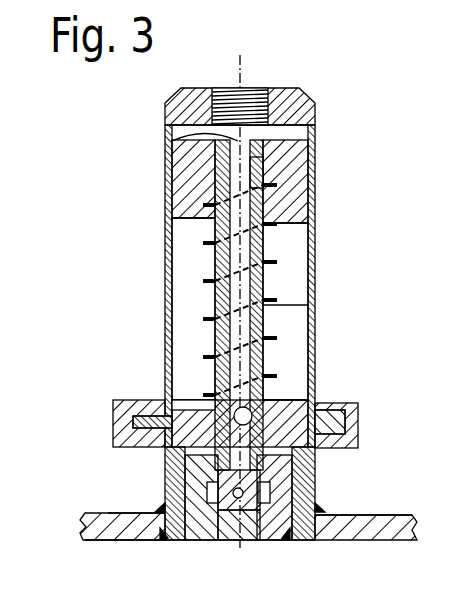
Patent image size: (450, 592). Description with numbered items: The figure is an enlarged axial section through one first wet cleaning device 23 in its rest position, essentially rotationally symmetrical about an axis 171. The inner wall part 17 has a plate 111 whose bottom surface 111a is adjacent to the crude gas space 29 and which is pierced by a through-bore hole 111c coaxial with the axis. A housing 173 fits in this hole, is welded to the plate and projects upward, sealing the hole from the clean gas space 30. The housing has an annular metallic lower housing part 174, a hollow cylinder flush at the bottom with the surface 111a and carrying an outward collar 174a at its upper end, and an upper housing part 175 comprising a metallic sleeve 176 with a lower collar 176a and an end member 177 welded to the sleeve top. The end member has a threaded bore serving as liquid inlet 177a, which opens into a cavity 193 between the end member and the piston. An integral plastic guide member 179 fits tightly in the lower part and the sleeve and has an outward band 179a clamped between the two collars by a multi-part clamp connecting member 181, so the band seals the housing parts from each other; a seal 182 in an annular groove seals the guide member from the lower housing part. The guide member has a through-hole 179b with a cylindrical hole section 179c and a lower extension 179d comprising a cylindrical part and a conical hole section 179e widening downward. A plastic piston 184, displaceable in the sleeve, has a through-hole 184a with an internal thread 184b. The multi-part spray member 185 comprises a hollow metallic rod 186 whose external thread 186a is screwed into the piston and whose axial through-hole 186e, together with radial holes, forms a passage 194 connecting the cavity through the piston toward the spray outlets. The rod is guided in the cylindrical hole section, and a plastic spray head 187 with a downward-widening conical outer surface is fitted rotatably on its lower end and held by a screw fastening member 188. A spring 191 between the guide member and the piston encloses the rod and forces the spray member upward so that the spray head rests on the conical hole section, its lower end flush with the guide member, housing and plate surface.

The inner wall part 17 is at (82, 512).
The first wet cleaning device 23 is at (158, 100).
The crude gas space 29 is at (345, 548).
The clean gas space 30 is at (335, 508).
The plate 111 is at (108, 512).
The surface 111a is at (100, 538).
The hole 111c is at (160, 512).
The axis 171 is at (240, 72).
The housing 173 is at (157, 272).
The lower housing part 174 is at (165, 470).
The collar 174a is at (120, 430).
The upper housing part 175 is at (168, 300).
The sleeve 176 is at (170, 335).
The collar 176a is at (175, 403).
The end member 177 is at (318, 100).
The liquid inlet 177a is at (263, 82).
The guide member 179 is at (170, 370).
The band 179a is at (358, 440).
The through-hole 179b is at (320, 395).
The cylindrical hole section 179c is at (305, 387).
The extension 179d is at (318, 468).
The conical hole section 179e is at (285, 540).
The connecting member 181 is at (360, 408).
The seal 182 is at (160, 540).
The piston 184 is at (170, 175).
The through-hole 184a is at (172, 226).
The internal thread 184b is at (172, 143).
The spray member 185 is at (235, 523).
The rod 186 is at (290, 234).
The external thread 186a is at (315, 178).
The through-hole 186e is at (315, 305).
The spray head 187 is at (190, 540).
The fastening member 188 is at (250, 540).
The spring 191 is at (300, 340).
The cavity 193 is at (312, 125).
The passage 194 is at (285, 276).